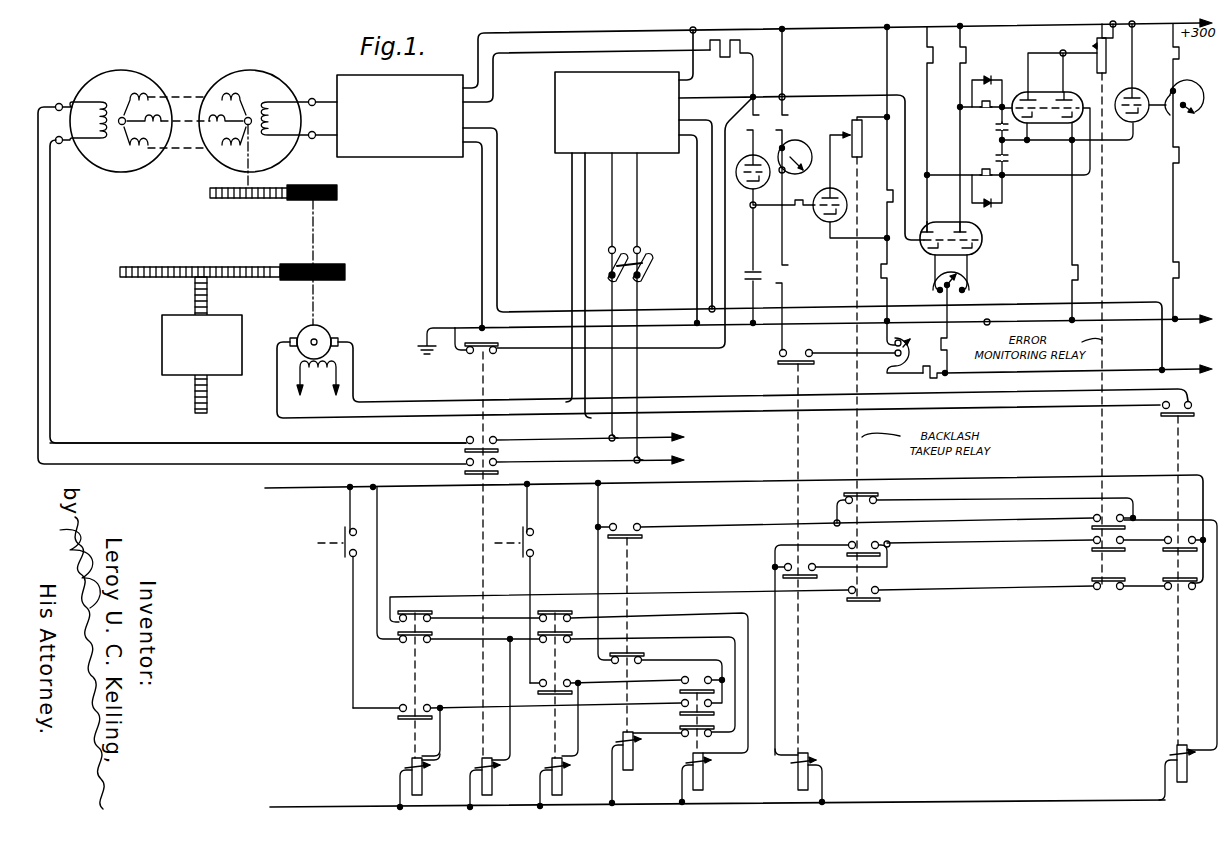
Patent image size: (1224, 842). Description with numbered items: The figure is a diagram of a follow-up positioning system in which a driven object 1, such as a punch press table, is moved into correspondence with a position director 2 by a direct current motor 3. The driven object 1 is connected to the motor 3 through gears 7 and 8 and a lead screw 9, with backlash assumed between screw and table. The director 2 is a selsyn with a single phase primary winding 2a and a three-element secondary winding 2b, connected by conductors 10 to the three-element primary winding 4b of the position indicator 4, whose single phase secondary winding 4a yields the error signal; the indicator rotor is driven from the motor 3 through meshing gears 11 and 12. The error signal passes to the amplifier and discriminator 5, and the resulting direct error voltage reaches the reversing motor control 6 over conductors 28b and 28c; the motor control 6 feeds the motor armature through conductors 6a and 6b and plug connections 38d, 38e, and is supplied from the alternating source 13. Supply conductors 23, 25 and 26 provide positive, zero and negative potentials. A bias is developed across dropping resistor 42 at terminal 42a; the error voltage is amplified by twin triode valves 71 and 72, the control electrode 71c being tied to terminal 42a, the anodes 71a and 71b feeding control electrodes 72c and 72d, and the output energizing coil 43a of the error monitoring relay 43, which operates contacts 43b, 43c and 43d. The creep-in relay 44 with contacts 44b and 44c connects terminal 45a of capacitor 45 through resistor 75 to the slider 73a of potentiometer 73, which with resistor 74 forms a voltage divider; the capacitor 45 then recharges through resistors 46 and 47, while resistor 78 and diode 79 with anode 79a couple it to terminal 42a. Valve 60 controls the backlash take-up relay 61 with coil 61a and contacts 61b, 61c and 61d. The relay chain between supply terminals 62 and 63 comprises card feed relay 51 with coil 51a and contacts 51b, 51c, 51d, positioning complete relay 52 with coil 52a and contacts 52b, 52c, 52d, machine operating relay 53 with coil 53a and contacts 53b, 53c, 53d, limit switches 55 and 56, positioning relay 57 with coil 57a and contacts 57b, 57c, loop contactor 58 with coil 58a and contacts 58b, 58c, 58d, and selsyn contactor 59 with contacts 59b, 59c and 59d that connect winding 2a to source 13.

The driven object 1 is at (162, 325).
The position director 2 is at (118, 70).
The single phase primary winding 2a is at (99, 121).
The three-element secondary winding 2b is at (140, 108).
The electric motor 3 is at (326, 328).
The position indicator 4 is at (250, 70).
The single phase secondary winding 4a is at (278, 119).
The three-element primary winding 4b is at (230, 106).
The error-signal amplifier and discriminator 5 is at (400, 116).
The reversing motor control system 6 is at (617, 112).
The conductor 6a is at (572, 183).
The conductor 6b is at (585, 212).
The gear 7 is at (332, 264).
The gear 8 is at (172, 267).
The lead screw 9 is at (195, 395).
The conductors 10 is at (182, 97).
The gear 11 is at (325, 200).
The gear 12 is at (261, 198).
The alternating voltage source 13 is at (662, 442).
The supply conductor 23 is at (1156, 27).
The supply conductor 25 is at (1150, 320).
The supply conductor 26 is at (1152, 368).
The conductor 28b is at (497, 84).
The conductor 28c is at (712, 98).
The plug connector 38d is at (612, 183).
The plug connector 38e is at (637, 212).
The voltage dropping resistor 42 is at (740, 40).
The terminal 42a is at (751, 96).
The error monitoring relay 43 is at (1106, 62).
The operating coil 43a is at (1092, 45).
The normally open contacts 43b is at (1092, 528).
The normally open contacts 43c is at (1092, 551).
The normally closed contacts 43d is at (1107, 590).
The creep-in relay 44 is at (798, 780).
The sealing-in contacts 44b is at (817, 577).
The normally open contacts 44c is at (805, 364).
The capacitor 45 is at (754, 281).
The terminal 45a is at (755, 208).
The resistor 46 is at (788, 122).
The adjustable resistor 47 is at (800, 144).
The card feed and read relay 51 is at (422, 786).
The operating coil 51a is at (410, 766).
The sealing-in contacts 51b is at (398, 719).
The normally closed contacts 51c is at (430, 632).
The contacts 51d is at (430, 611).
The positioning complete relay 52 is at (703, 780).
The operating coil 52a is at (690, 762).
The normally closed contacts 52b is at (712, 736).
The contacts 52c is at (680, 714).
The contacts 52d is at (680, 691).
The machine operating cycle relay 53 is at (562, 786).
The coil 53a is at (550, 765).
The sealing-in contacts 53b is at (538, 694).
The normally closed contacts 53c is at (570, 632).
The contacts 53d is at (570, 611).
The limit switch 55 is at (343, 552).
The limit switch 56 is at (520, 552).
The positioning relay 57 is at (633, 768).
The operating coil 57a is at (621, 740).
The normally open contacts 57b is at (640, 538).
The normally closed contacts 57c is at (643, 653).
The loop contactor 58 is at (1187, 773).
The operating coil 58a is at (1172, 753).
The contacts 58b is at (1170, 418).
The normally open contacts 58c is at (1172, 551).
The normally closed contacts 58d is at (1170, 590).
The selsyn contactor 59 is at (492, 786).
The contacts 59b is at (465, 472).
The contacts 59c is at (465, 450).
The relay contact 59d is at (496, 341).
The electric valve 60 is at (823, 219).
The backlash take-up complete relay 61 is at (862, 147).
The operating coil 61a is at (850, 127).
The normally open contacts 61b is at (873, 603).
The normally open contacts 61c is at (847, 555).
The normally closed contacts 61d is at (902, 493).
The supply terminal 62 is at (297, 488).
The lower terminal 63 is at (290, 806).
The twin triode electric valve 71 is at (982, 252).
The anode 71a is at (935, 228).
The anode 71b is at (968, 225).
The control electrode 71c is at (910, 245).
The twin triode electric valve 72 is at (1047, 92).
The control electrode 72c is at (1038, 123).
The control electrode 72d is at (1076, 100).
The potentiometer 73 is at (909, 356).
The slider 73a is at (903, 338).
The resistor 74 is at (923, 378).
The resistor 75 is at (790, 272).
The resistor 78 is at (760, 122).
The diode electric valve 79 is at (758, 160).
The anode 79a is at (745, 160).